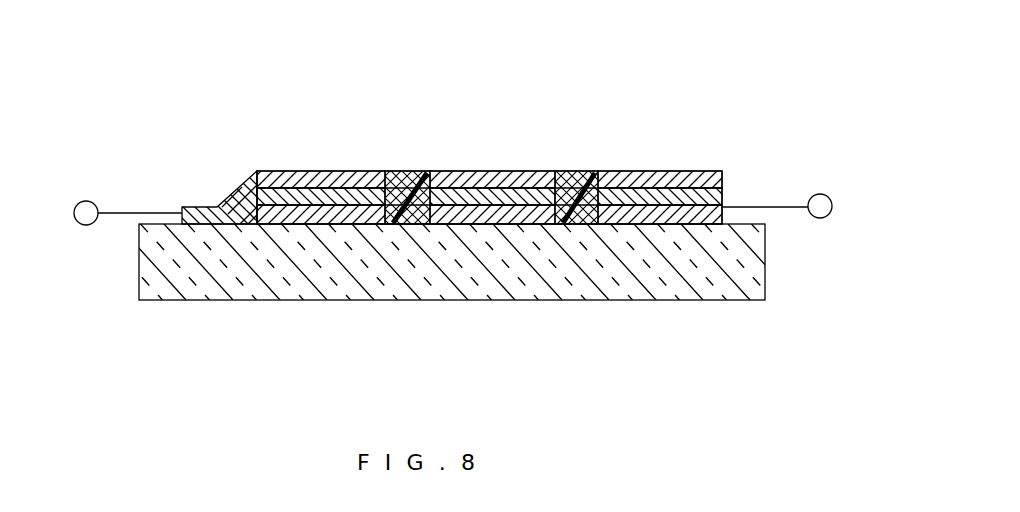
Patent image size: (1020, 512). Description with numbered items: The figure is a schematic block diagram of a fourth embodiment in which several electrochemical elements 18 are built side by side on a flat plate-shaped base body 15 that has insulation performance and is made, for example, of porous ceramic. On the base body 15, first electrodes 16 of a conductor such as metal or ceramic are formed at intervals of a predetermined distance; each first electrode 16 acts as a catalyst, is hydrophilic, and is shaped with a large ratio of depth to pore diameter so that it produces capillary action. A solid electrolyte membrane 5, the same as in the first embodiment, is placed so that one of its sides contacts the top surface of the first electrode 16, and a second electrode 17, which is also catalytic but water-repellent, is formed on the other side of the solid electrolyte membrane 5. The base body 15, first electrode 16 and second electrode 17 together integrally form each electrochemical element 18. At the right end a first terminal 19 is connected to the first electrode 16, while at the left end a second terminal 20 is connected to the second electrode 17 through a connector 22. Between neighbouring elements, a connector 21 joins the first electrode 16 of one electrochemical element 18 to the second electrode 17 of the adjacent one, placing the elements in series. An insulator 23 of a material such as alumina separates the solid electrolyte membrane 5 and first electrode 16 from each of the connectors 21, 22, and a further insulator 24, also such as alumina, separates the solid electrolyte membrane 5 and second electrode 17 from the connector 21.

The solid electrolyte membrane 5 is at (280, 171).
The base body 15 is at (139, 272).
The first electrode 16 is at (343, 171).
The second electrode 17 is at (315, 171).
The electrochemical element 18 is at (338, 73).
The first terminal 19 is at (825, 194).
The second terminal 20 is at (88, 201).
The connector 21 is at (410, 171).
The connector 22 is at (233, 195).
The insulator 23 is at (229, 216).
The insulator 24 is at (392, 171).